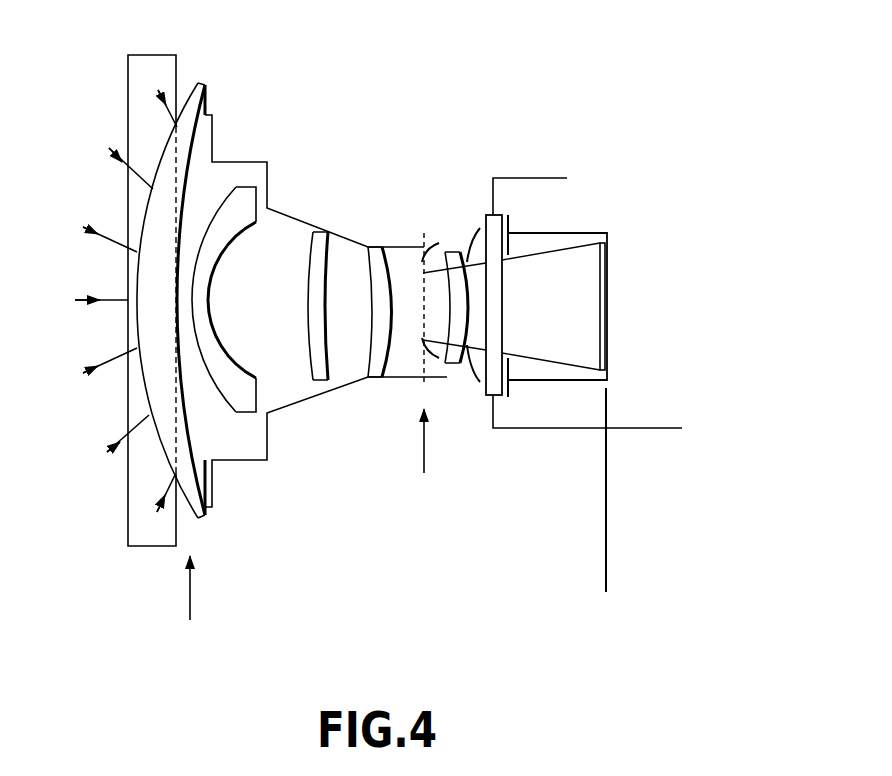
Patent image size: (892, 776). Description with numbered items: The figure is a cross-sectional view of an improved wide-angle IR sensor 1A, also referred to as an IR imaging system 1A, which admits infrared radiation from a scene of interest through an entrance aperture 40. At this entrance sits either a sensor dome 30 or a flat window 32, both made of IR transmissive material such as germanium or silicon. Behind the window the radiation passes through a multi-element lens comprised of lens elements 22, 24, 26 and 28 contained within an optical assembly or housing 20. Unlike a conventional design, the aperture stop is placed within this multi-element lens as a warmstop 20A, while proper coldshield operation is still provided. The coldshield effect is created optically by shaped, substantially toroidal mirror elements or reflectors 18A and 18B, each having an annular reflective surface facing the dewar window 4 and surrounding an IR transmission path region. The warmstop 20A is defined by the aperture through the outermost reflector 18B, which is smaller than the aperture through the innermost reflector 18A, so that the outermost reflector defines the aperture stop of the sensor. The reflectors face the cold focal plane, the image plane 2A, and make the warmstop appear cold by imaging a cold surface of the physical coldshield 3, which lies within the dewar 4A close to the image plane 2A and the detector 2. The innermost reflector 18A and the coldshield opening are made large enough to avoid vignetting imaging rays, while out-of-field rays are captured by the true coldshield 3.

The IR sensor 1A is at (724, 254).
The detector 2 is at (607, 280).
The image plane 2A is at (602, 563).
The coldshield 3 is at (590, 232).
The dewar window 4 is at (499, 214).
The dewar 4A is at (633, 428).
The innermost reflector 18A is at (473, 235).
The outermost reflector 18B is at (425, 250).
The housing 20 is at (290, 407).
The warmstop 20A is at (424, 470).
The lens element 22 is at (447, 252).
The lens element 24 is at (372, 243).
The lens element 26 is at (326, 231).
The lens element 28 is at (256, 193).
The sensor dome 30 is at (207, 103).
The flat window 32 is at (177, 57).
The entrance aperture 40 is at (190, 595).